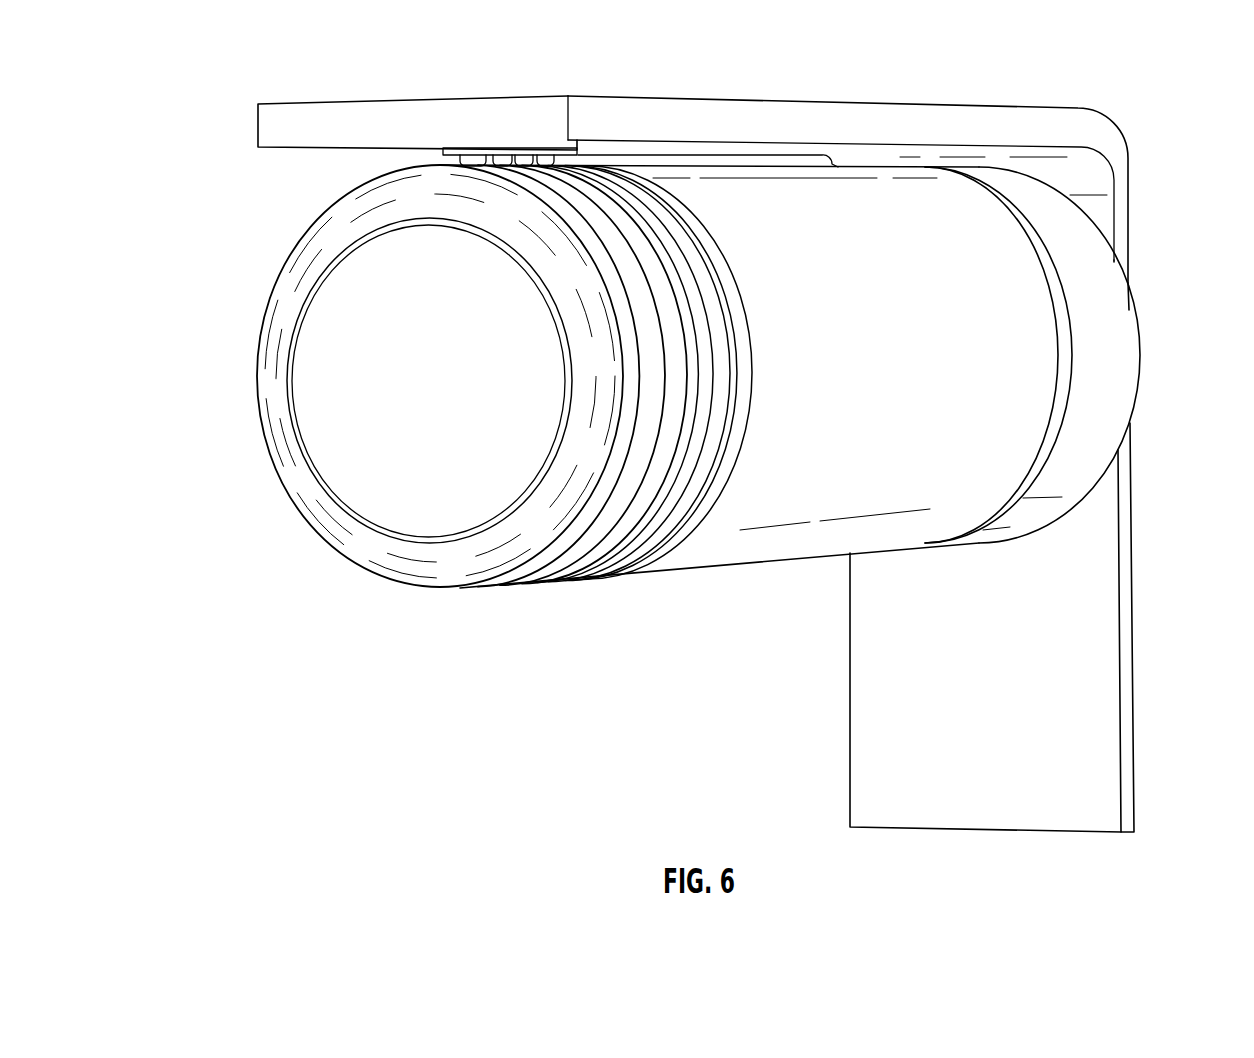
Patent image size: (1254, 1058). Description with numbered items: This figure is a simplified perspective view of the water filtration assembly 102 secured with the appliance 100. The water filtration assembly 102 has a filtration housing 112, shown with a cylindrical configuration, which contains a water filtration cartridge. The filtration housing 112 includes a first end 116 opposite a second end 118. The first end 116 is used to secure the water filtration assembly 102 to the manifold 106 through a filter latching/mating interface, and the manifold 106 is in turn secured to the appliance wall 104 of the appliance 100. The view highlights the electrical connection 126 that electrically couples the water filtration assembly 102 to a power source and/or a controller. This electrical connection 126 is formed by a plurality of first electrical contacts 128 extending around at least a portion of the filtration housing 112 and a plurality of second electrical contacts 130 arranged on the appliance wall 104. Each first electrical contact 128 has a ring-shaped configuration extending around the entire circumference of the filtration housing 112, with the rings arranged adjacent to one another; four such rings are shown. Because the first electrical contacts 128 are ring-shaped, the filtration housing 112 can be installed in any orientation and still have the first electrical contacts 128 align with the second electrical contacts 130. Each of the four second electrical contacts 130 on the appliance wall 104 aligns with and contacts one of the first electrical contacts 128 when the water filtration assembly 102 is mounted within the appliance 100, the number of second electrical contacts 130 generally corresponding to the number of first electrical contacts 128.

The appliance 100 is at (717, 443).
The water filtration assembly 102 is at (696, 421).
The appliance wall 104 is at (1133, 563).
The manifold 106 is at (1110, 357).
The filtration housing 112 is at (290, 498).
The first end 116 is at (1079, 355).
The second end 118 is at (363, 380).
The electrical connection 126 is at (515, 144).
The first electrical contacts 128 is at (600, 218).
The second electrical contacts 130 is at (479, 160).